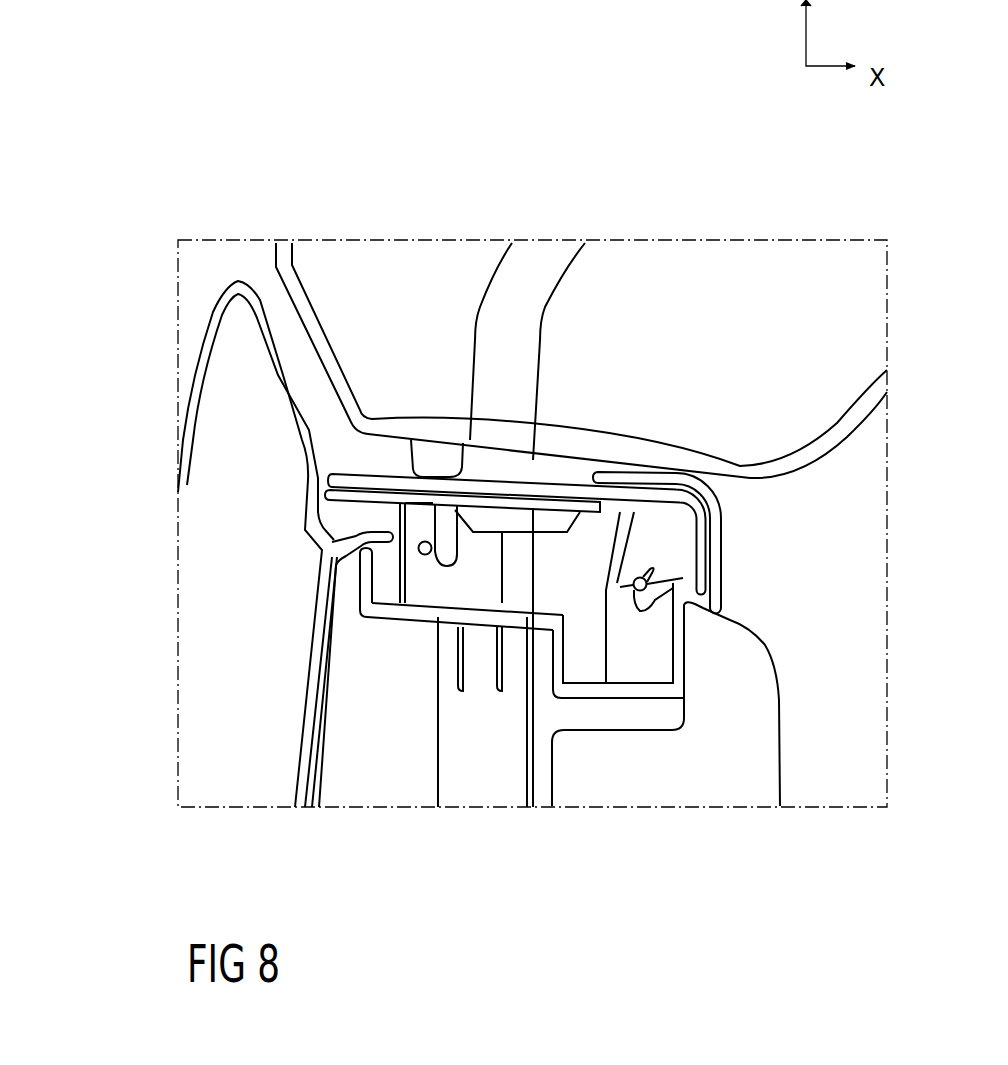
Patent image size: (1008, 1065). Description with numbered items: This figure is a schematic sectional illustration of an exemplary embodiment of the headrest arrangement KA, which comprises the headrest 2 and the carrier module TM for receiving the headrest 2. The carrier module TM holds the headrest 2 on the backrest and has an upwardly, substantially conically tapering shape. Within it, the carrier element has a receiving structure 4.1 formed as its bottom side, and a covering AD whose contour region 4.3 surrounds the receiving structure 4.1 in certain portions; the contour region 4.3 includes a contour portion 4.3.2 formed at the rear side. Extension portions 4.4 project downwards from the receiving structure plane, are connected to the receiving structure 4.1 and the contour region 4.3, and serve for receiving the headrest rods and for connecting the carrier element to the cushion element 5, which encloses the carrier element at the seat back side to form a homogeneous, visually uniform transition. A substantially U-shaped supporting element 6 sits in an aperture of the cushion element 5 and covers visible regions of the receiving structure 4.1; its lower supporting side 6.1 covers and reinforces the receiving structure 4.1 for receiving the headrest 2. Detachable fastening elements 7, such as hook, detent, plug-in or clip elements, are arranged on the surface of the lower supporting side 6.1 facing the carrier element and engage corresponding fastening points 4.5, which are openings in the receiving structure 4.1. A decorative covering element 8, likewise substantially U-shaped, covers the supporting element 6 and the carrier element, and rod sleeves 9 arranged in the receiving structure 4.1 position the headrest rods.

The headrest 2 is at (408, 258).
The receiving structure 4.1 is at (510, 507).
The contour region 4.3 is at (205, 362).
The contour portion 4.3.2 is at (198, 487).
The extension portions 4.4 is at (557, 667).
The fastening points 4.5 is at (417, 548).
The cushion element 5 is at (759, 709).
The supporting element 6 is at (570, 476).
The lower supporting side 6.1 is at (462, 475).
The fastening elements 7 is at (437, 515).
The covering element 8 is at (708, 490).
The rod sleeves 9 is at (533, 460).
The headrest arrangement KA is at (236, 203).
The carrier module TM is at (203, 281).